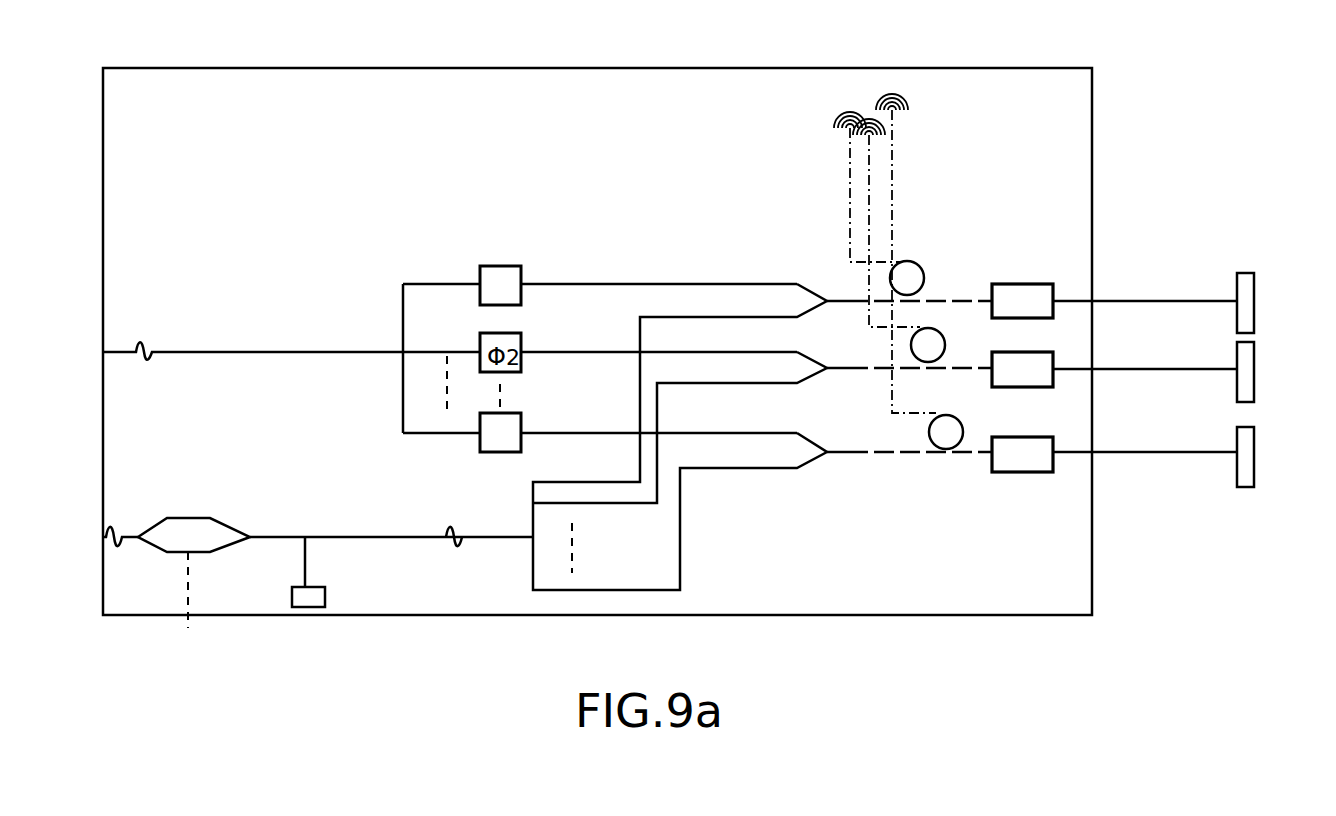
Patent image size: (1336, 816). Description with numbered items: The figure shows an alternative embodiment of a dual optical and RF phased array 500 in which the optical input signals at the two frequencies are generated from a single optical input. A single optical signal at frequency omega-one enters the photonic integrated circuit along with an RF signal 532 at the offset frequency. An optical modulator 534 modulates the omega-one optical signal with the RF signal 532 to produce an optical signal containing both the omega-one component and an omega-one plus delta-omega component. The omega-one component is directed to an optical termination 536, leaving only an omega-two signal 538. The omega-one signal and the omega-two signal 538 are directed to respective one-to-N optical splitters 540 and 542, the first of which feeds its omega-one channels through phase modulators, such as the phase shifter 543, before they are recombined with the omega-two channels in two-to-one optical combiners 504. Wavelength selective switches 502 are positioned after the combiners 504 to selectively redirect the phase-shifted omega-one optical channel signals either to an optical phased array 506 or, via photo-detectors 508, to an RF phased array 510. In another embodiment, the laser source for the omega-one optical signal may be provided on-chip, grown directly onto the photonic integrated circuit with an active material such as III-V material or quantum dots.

The dual optical and RF phased array 500 is at (1156, 141).
The wavelength selective switch 502 is at (920, 266).
The 2:1 optical combiner 504 is at (808, 284).
The optical phased array 506 is at (893, 142).
The photo-detector 508 is at (1021, 284).
The RF phased array 510 is at (1245, 273).
The RF signal 532 is at (165, 641).
The optical modulator 534 is at (190, 518).
The optical termination 536 is at (325, 597).
The ω2 signal 538 is at (453, 537).
The 1:N optical splitter 540 is at (409, 284).
The 1:N optical splitter 542 is at (522, 452).
The phase shifter 1 543 is at (522, 266).